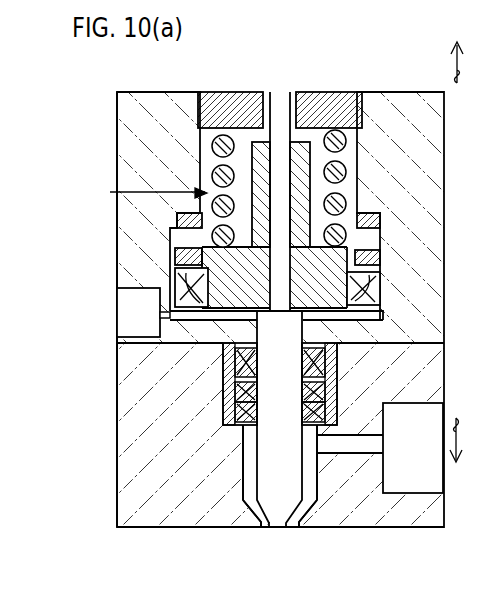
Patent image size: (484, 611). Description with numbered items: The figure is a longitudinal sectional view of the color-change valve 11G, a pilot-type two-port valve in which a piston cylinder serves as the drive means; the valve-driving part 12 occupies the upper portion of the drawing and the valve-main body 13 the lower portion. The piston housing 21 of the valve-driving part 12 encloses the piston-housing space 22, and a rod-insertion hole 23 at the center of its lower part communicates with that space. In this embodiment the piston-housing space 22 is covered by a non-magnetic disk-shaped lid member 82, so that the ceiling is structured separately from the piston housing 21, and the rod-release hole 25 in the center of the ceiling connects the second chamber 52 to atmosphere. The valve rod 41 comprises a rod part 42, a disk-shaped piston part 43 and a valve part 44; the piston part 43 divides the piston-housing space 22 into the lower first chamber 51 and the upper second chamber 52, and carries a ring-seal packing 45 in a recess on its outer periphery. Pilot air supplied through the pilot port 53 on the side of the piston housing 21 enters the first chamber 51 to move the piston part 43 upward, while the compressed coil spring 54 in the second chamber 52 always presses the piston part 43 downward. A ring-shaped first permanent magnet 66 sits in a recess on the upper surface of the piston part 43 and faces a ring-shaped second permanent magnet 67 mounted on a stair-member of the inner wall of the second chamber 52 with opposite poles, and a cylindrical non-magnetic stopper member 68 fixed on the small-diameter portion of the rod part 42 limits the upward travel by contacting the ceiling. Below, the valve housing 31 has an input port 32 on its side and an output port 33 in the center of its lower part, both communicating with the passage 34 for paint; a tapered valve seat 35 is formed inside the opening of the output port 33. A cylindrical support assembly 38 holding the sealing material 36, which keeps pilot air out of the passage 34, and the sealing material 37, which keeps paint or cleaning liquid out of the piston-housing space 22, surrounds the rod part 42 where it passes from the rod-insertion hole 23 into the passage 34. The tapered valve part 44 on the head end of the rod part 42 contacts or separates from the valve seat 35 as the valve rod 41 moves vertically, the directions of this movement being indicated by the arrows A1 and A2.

The color-change valve 11G is at (378, 91).
The valve-driving part 12 is at (118, 142).
The valve-main body 13 is at (119, 498).
The piston housing 21 is at (430, 134).
The piston-housing space 22 is at (205, 163).
The rod-insertion hole 23 is at (341, 387).
The rod-release hole 25 is at (276, 108).
The valve housing 31 is at (138, 428).
The input port 32 is at (410, 492).
The output port 33 is at (284, 529).
The passage 34 is at (293, 466).
The valve seat 35 is at (257, 528).
The sealing material 36 is at (235, 362).
The sealing material 37 is at (240, 392).
The support assembly 38 is at (337, 362).
The valve rod 41 is at (302, 92).
The rod part 42 is at (291, 453).
The piston part 43 is at (254, 292).
The valve part 44 is at (277, 528).
The ring-seal packing 45 is at (376, 282).
The first chamber 51 is at (195, 315).
The second chamber 52 is at (143, 191).
The pilot port 53 is at (143, 290).
The coil spring 54 is at (342, 168).
The first permanent magnet 66 is at (177, 256).
The second permanent magnet 67 is at (177, 219).
The stopper member 68 is at (310, 157).
The lid member 82 is at (234, 108).
The direction A1 is at (462, 77).
The direction A2 is at (462, 425).